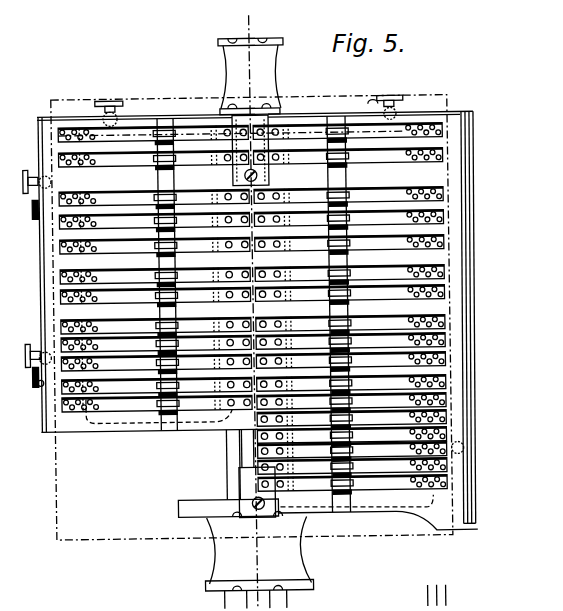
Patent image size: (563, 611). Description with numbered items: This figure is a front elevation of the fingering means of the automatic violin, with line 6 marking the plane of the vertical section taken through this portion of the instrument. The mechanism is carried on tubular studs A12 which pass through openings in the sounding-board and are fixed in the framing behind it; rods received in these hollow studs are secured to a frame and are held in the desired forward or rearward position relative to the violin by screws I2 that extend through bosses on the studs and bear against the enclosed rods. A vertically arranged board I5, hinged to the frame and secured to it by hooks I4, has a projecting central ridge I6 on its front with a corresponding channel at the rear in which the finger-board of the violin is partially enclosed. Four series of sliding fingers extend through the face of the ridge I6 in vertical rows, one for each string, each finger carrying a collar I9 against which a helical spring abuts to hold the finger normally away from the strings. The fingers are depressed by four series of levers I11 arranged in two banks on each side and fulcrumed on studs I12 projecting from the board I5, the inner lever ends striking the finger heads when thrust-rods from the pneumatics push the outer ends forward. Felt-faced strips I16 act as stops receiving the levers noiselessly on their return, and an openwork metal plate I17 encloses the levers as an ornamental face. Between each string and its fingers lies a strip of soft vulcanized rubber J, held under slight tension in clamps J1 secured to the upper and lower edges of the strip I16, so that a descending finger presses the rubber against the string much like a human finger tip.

The section line 6 is at (250, 304).
The board I5 is at (445, 118).
The central ridge I6 is at (298, 120).
The collars I9 is at (470, 314).
The levers I11 is at (188, 132).
The studs I12 is at (158, 134).
The felt-faced strips or bars I16 is at (239, 518).
The openwork plate I17 is at (0, 97).
The screws I2 is at (0, 314).
The hooks I4 is at (30, 380).
The tubular studs A12 is at (117, 121).
The soft vulcanized rubber strip J is at (226, 49).
The clamps J1 is at (284, 45).